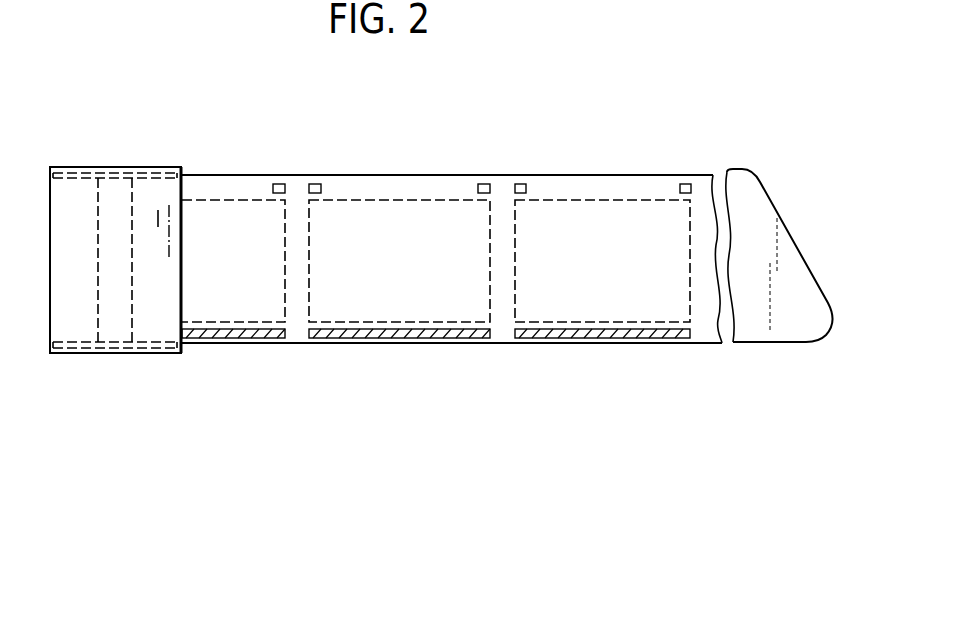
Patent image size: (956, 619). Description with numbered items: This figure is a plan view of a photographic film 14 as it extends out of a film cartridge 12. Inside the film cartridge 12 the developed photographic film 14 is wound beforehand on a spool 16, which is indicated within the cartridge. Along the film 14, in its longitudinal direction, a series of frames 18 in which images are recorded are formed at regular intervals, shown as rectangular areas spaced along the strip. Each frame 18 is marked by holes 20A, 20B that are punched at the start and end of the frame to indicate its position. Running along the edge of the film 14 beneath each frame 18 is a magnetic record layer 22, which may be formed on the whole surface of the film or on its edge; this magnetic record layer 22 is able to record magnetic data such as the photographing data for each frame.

The film cartridge 12 is at (162, 166).
The photographic film 14 is at (398, 174).
The spool 16 is at (98, 215).
The frame 18 is at (350, 210).
The hole 20A is at (476, 188).
The hole 20B is at (317, 183).
The magnetic record layer 22 is at (433, 339).